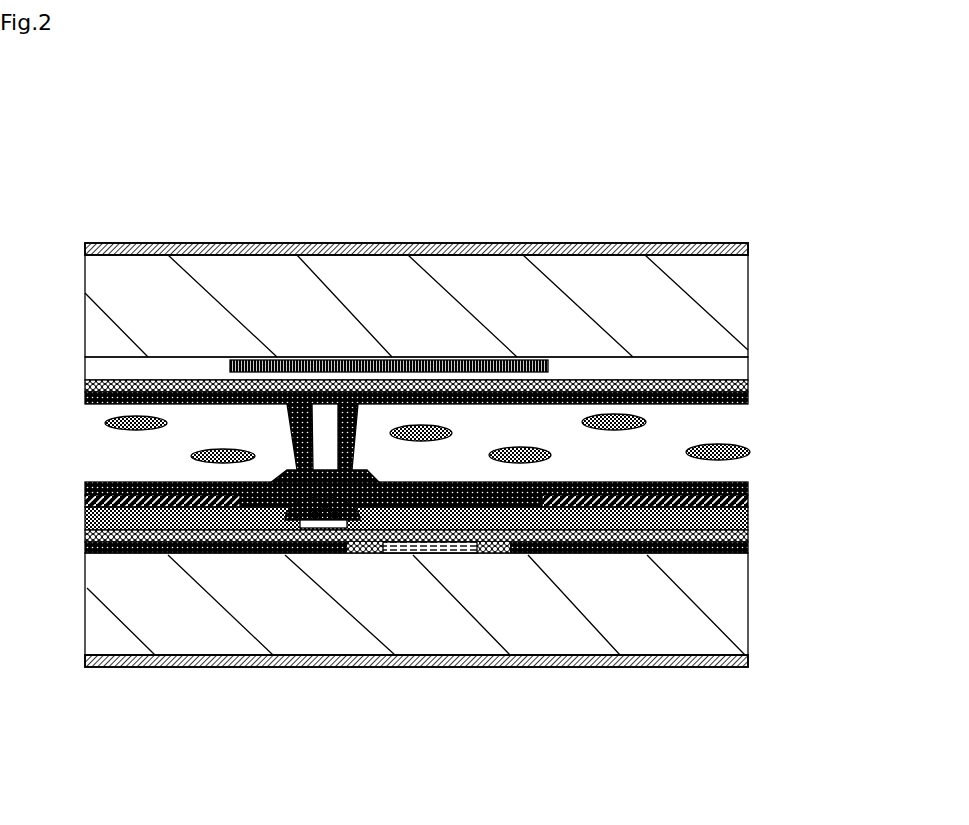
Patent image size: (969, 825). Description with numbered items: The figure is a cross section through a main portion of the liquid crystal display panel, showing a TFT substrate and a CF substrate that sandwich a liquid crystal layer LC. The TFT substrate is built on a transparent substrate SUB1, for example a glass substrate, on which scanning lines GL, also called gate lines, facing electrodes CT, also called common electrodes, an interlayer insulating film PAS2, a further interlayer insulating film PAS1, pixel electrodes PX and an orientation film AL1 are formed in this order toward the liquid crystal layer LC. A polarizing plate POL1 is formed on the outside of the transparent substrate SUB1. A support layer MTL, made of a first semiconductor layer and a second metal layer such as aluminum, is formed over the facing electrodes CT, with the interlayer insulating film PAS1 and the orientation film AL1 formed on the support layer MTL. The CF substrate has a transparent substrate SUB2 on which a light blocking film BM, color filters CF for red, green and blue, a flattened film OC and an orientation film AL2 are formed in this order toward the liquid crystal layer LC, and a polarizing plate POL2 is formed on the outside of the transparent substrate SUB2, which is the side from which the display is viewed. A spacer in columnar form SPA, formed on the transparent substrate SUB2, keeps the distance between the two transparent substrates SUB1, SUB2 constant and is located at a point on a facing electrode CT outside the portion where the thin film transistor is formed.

The polarizing plate POL2 is at (557, 243).
The transparent substrate SUB2 is at (728, 290).
The color filters CF is at (613, 362).
The light blocking film BM is at (462, 358).
The flattened film OC is at (374, 388).
The orientation film AL2 is at (152, 390).
The spacer in columnar form SPA is at (322, 428).
The liquid crystal layer LC is at (702, 428).
The orientation film AL1 is at (165, 497).
The pixel electrodes PX is at (660, 506).
The interlayer insulating film PAS2 is at (499, 545).
The support layer MTL is at (330, 528).
The interlayer insulating film PAS1 is at (587, 518).
The facing electrodes CT is at (276, 551).
The scanning lines GL is at (427, 551).
The transparent substrate SUB1 is at (718, 587).
The polarizing plate POL1 is at (134, 657).